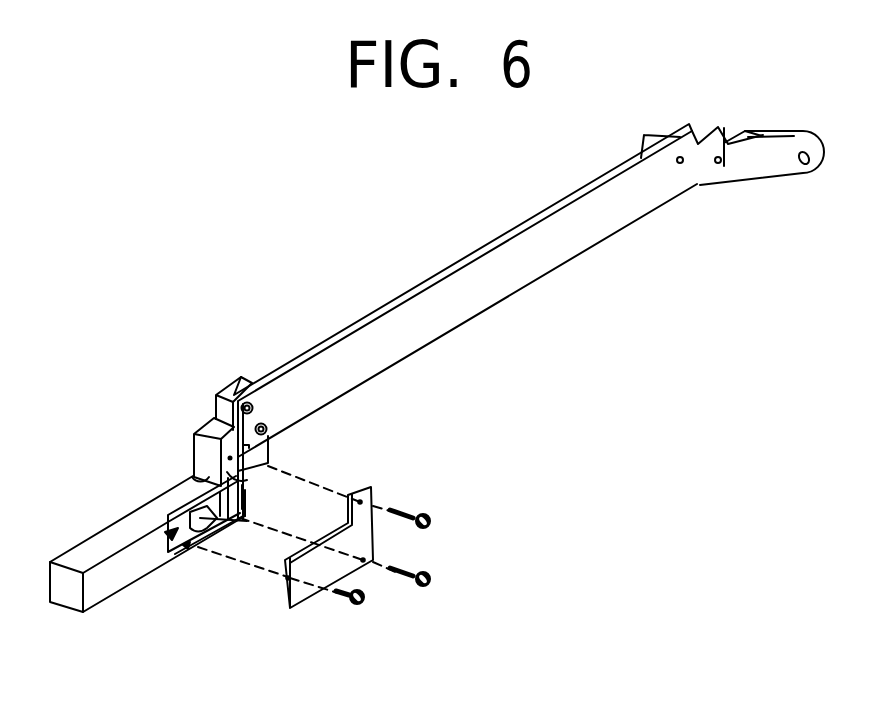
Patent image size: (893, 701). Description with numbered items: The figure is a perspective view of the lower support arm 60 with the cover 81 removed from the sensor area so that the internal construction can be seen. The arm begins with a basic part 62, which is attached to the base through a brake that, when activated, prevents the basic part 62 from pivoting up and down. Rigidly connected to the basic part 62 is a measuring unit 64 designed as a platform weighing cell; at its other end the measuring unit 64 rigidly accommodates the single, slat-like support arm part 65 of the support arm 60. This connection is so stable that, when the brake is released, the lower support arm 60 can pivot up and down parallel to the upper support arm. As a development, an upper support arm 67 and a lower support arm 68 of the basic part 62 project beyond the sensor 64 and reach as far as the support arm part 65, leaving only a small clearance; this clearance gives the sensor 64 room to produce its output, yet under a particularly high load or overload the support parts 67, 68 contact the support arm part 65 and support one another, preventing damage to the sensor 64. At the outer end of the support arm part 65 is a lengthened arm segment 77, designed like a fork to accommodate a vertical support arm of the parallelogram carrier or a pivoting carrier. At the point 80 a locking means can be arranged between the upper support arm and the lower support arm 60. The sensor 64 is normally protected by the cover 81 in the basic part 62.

The lower support arm 60 is at (532, 322).
The basic part 62 is at (97, 532).
The measuring unit 64 is at (193, 545).
The support arm part 65 is at (452, 300).
The upper support arm 67 is at (192, 476).
The lower support arm 68 is at (240, 528).
The lengthened arm segment 77 is at (758, 170).
The point 80 is at (688, 204).
The cover 81 is at (367, 541).